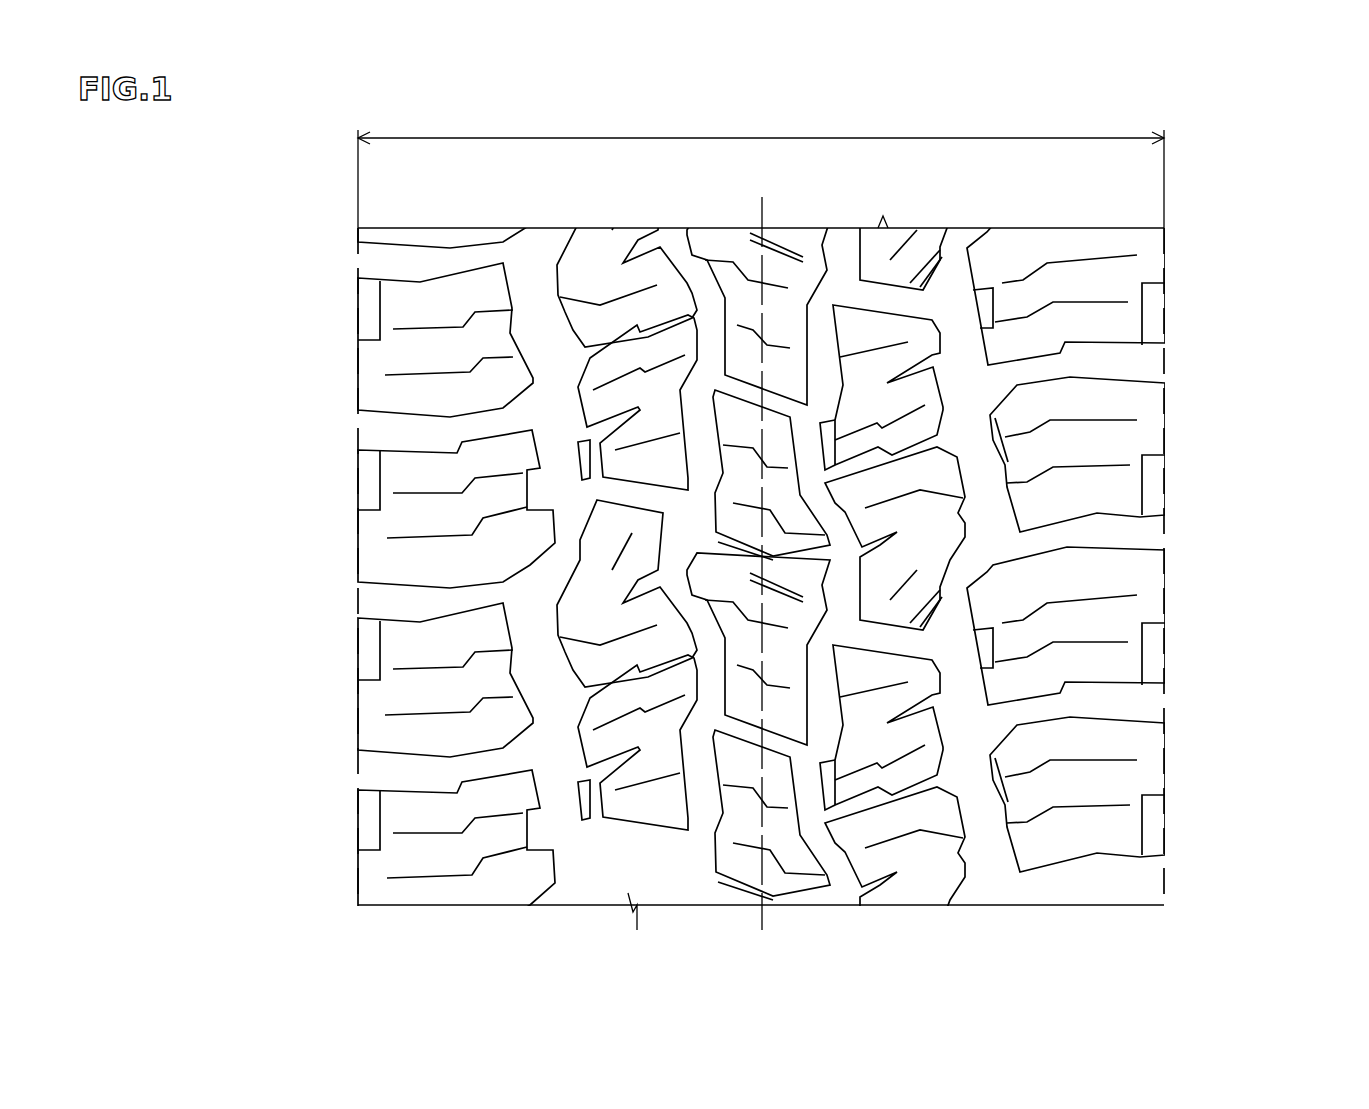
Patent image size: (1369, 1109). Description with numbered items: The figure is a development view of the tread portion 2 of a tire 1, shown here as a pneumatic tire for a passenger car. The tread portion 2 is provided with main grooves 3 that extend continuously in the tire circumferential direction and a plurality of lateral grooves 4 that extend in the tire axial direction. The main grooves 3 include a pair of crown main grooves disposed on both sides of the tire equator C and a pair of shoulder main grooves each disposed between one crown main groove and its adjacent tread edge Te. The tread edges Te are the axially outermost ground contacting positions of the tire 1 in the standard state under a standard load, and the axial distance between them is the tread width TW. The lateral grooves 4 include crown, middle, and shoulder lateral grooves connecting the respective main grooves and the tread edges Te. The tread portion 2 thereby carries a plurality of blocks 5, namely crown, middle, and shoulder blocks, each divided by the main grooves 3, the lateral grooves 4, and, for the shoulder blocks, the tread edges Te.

The tire 1 is at (1277, 178).
The tread portion 2 is at (1188, 200).
The main grooves 3 is at (530, 283).
The lateral grooves 4 is at (893, 300).
The blocks 5 is at (396, 736).
The tire equator C is at (761, 550).
The tread edges Te is at (352, 262).
The tread width TW is at (761, 167).